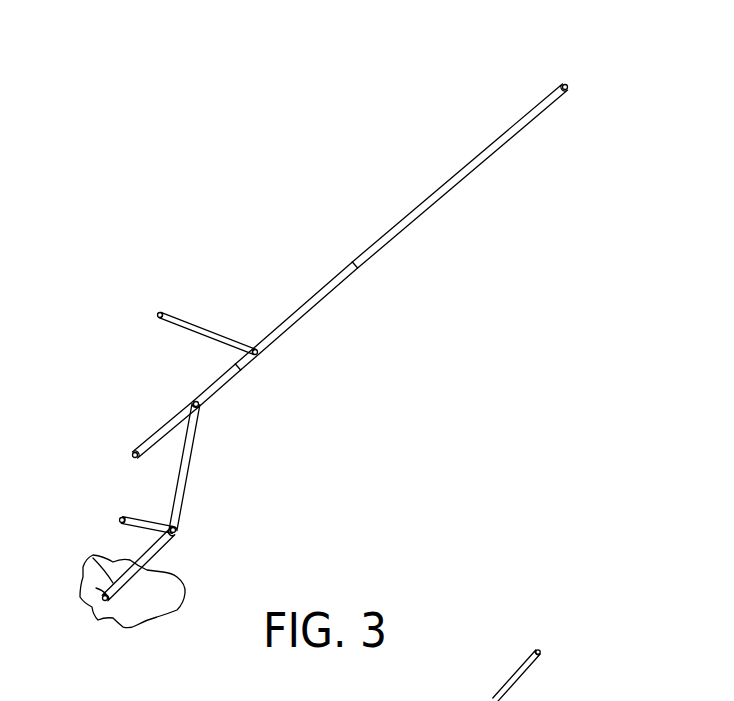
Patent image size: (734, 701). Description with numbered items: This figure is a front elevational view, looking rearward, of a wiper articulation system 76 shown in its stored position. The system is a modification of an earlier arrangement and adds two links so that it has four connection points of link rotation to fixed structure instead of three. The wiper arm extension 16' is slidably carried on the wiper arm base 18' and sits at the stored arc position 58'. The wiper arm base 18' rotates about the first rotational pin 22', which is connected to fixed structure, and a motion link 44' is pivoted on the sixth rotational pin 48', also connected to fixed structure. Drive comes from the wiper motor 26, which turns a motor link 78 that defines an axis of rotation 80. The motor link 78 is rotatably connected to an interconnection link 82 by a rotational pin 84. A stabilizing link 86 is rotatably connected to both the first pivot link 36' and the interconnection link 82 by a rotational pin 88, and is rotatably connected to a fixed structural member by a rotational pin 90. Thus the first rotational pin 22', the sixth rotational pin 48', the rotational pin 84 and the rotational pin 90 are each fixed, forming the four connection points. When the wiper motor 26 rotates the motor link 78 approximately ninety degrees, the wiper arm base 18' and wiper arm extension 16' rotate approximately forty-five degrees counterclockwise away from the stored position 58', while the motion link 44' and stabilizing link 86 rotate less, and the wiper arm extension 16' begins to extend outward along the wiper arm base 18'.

The stored arc position 58' is at (594, 77).
The wiper articulation system 76 is at (567, 202).
The wiper arm extension 16' is at (401, 227).
The wiper arm base 18' is at (239, 389).
The first rotational pin 22' is at (128, 429).
The motion link 44' is at (184, 322).
The sixth rotational pin 48' is at (127, 331).
The first pivot link 36' is at (212, 466).
The stabilizing link 86 is at (148, 523).
The rotational pin 90 is at (122, 520).
The rotational pin 88 is at (178, 530).
The interconnection link 82 is at (148, 552).
The rotational pin 84 is at (104, 600).
The wiper motor 26 is at (160, 605).
The axis of rotation 80 is at (93, 558).
The motor link 78 is at (98, 590).